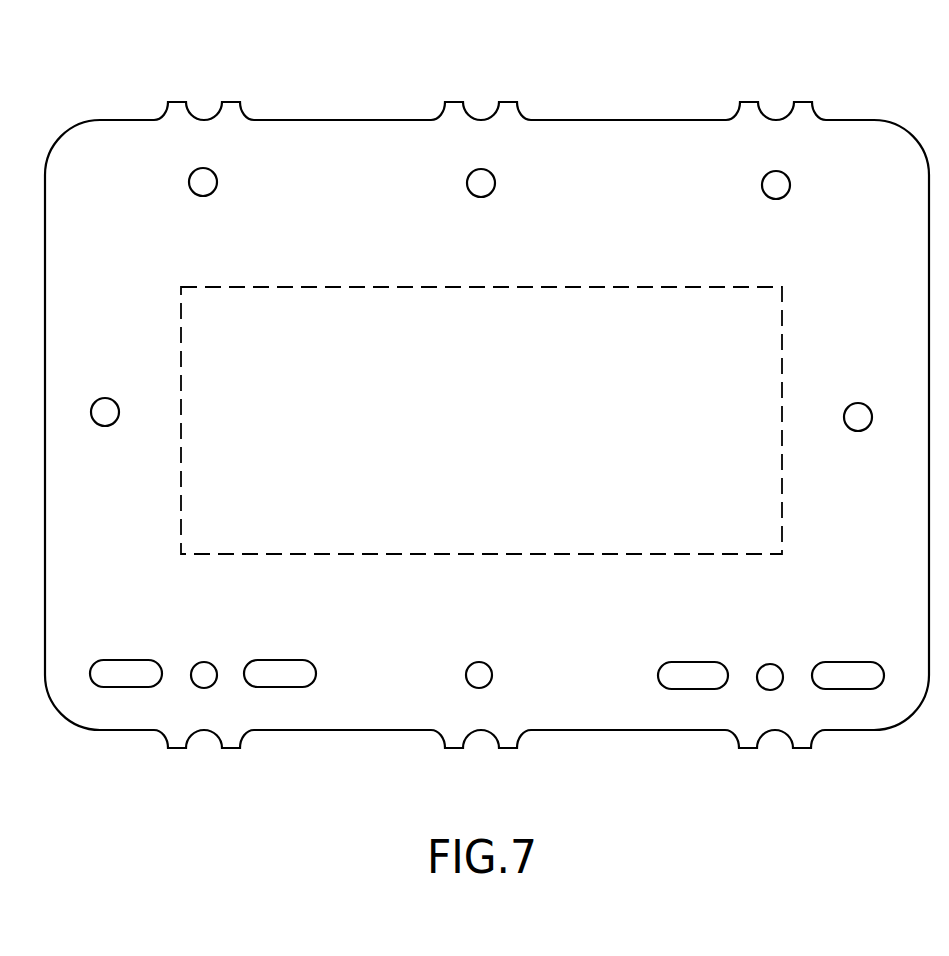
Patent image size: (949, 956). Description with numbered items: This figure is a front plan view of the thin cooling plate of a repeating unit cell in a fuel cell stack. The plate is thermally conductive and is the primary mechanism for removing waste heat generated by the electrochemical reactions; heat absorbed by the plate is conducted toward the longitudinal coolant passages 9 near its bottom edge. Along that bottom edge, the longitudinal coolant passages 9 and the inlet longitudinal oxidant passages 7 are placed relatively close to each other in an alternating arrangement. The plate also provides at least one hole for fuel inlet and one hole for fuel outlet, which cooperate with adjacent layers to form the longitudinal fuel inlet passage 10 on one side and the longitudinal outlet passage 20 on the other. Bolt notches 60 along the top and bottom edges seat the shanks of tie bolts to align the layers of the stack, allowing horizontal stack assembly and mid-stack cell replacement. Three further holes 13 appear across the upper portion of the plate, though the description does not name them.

The bolt notches 60 is at (175, 101).
The hole 13 is at (205, 196).
The longitudinal outlet passage 20 is at (105, 398).
The longitudinal fuel inlet passage 10 is at (858, 403).
The longitudinal coolant passages 9 is at (125, 660).
The inlet longitudinal oxidant passages 7 is at (207, 663).